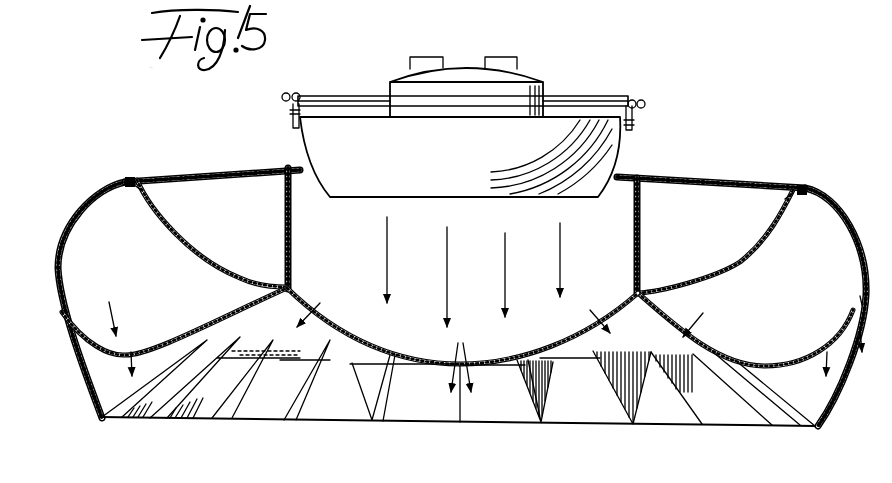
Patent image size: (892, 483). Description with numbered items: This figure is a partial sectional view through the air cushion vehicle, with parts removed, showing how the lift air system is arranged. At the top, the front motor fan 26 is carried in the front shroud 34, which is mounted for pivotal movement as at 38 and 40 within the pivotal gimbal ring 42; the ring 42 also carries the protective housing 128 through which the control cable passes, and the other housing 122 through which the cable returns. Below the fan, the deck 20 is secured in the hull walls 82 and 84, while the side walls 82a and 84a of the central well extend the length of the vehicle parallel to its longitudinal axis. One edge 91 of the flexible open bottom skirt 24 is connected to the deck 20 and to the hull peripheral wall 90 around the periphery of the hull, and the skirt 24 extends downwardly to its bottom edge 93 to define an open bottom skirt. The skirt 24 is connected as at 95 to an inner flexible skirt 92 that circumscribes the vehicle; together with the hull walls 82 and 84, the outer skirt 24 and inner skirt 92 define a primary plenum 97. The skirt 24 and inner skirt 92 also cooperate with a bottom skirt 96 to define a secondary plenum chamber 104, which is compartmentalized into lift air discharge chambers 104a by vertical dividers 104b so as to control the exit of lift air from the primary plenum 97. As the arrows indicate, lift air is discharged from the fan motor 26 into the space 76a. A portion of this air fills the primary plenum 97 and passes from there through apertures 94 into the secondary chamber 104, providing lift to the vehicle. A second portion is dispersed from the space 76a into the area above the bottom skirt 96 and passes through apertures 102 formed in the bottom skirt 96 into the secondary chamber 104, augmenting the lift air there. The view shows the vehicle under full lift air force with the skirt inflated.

The deck 20 is at (739, 177).
The flexible open bottom skirt 24 is at (60, 212).
The front motor fan 26 is at (517, 86).
The front shroud 34 is at (418, 162).
The pivotal mounting 38 is at (291, 108).
The pivotal mounting 40 is at (633, 132).
The pivotal gimbal ring 42 is at (592, 98).
The space 76a is at (503, 259).
The hull wall 82 is at (178, 238).
The side wall 82a is at (293, 252).
The hull wall 84 is at (752, 232).
The side wall 84a is at (634, 264).
The peripheral wall 90 is at (134, 187).
The edge of the skirt 91 is at (128, 178).
The inner flexible skirt 92 is at (131, 350).
The bottom edge 93 is at (100, 419).
The apertures 94 is at (858, 340).
The connection 95 is at (64, 290).
The bottom skirt 96 is at (390, 352).
The primary plenum 97 is at (184, 286).
The apertures 102 is at (466, 353).
The secondary plenum chamber 104 is at (210, 393).
The lift air discharge chambers 104a is at (388, 400).
The vertical dividers 104b is at (630, 407).
The housing 122 is at (645, 103).
The protective housing 128 is at (286, 93).